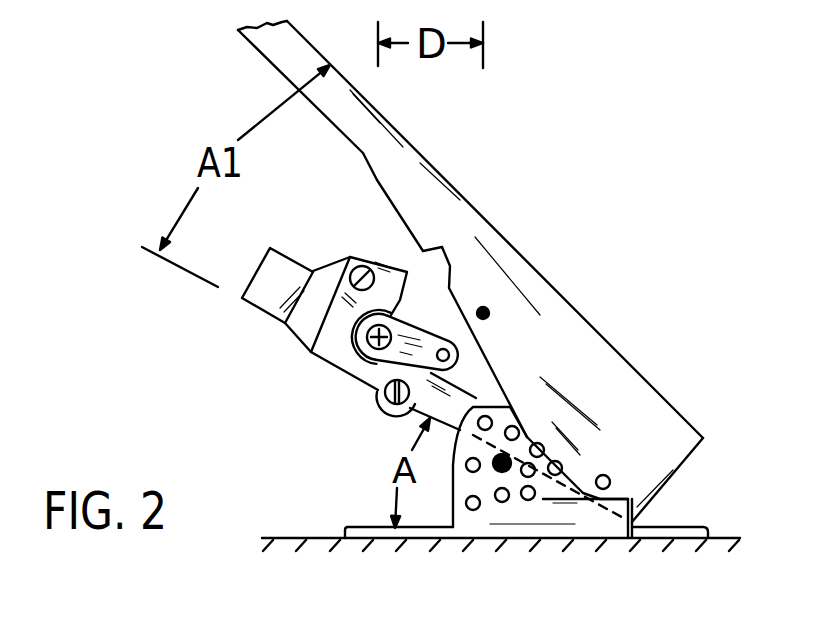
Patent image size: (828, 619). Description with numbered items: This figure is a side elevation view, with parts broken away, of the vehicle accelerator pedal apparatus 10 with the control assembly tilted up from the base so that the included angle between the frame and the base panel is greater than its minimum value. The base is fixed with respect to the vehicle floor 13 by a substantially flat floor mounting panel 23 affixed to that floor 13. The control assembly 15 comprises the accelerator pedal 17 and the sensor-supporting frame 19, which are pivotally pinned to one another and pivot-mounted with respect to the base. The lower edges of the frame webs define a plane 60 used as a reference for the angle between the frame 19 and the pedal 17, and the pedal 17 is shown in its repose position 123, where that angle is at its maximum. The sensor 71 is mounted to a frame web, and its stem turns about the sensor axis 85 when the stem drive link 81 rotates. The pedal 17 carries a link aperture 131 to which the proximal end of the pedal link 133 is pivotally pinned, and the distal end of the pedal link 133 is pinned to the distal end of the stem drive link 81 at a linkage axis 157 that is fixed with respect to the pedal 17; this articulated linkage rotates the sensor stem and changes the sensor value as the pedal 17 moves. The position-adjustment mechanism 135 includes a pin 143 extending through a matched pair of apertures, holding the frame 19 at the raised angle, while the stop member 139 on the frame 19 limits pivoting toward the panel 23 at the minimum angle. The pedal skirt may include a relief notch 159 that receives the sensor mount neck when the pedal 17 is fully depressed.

The vehicle accelerator pedal apparatus 10 is at (185, 368).
The floor 13 is at (313, 538).
The control assembly 15 is at (168, 148).
The accelerator pedal 17 is at (288, 55).
The sensor-supporting frame 19 is at (334, 349).
The floor mounting panel 23 is at (665, 525).
The plane 60 is at (187, 277).
The sensor 71 is at (296, 258).
The stem drive link 81 is at (430, 330).
The sensor axis 85 is at (462, 270).
The repose position 123 is at (437, 139).
The link aperture 131 is at (492, 314).
The pedal link 133 is at (481, 350).
The position-adjustment mechanism 135 is at (269, 442).
The stop member 139 is at (390, 415).
The pin 143 is at (502, 470).
The linkage axis 157 is at (488, 311).
The relief notch 159 is at (469, 238).